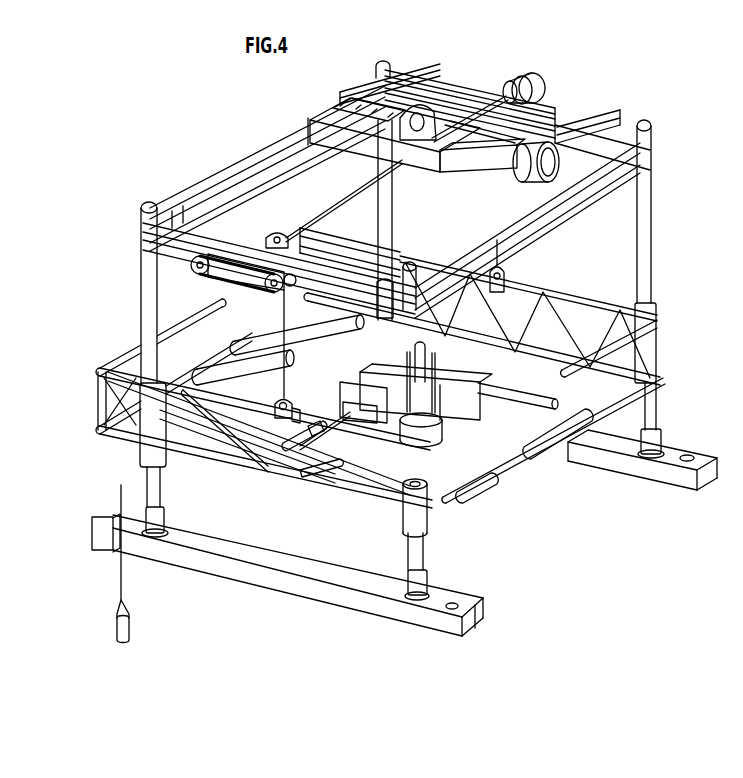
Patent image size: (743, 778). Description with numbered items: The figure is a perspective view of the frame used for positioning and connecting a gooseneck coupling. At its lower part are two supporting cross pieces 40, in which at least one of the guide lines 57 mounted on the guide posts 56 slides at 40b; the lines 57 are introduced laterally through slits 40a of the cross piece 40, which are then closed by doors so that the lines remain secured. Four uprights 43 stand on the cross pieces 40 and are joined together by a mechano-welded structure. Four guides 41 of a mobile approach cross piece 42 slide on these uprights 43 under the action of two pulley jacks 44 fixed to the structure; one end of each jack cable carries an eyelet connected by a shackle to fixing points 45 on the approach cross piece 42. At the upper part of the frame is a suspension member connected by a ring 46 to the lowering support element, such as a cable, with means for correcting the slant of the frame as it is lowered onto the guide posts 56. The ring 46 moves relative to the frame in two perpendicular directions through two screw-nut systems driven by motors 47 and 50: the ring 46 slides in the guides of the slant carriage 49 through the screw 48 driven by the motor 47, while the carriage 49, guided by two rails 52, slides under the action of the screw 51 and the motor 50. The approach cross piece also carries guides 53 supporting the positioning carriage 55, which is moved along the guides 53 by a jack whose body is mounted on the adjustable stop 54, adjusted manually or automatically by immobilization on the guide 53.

The supporting cross piece 40 is at (318, 592).
The slit 40a is at (110, 556).
The sliding location 40b is at (440, 636).
The guide 41 is at (145, 453).
The mobile approach cross piece 42 is at (92, 372).
The upright 43 is at (146, 297).
The pulley jack 44 is at (207, 283).
The fixing point 45 is at (507, 274).
The ring 46 is at (414, 104).
The motor 47 is at (546, 185).
The screw 48 is at (453, 148).
The slant carriage 49 is at (340, 112).
The motor 50 is at (542, 80).
The screw 51 is at (477, 122).
The rail 52 is at (277, 149).
The guide 53 is at (462, 498).
The adjustable stop 54 is at (498, 472).
The positioning carriage 55 is at (548, 452).
The guide post 56 is at (118, 628).
The guide line 57 is at (128, 582).